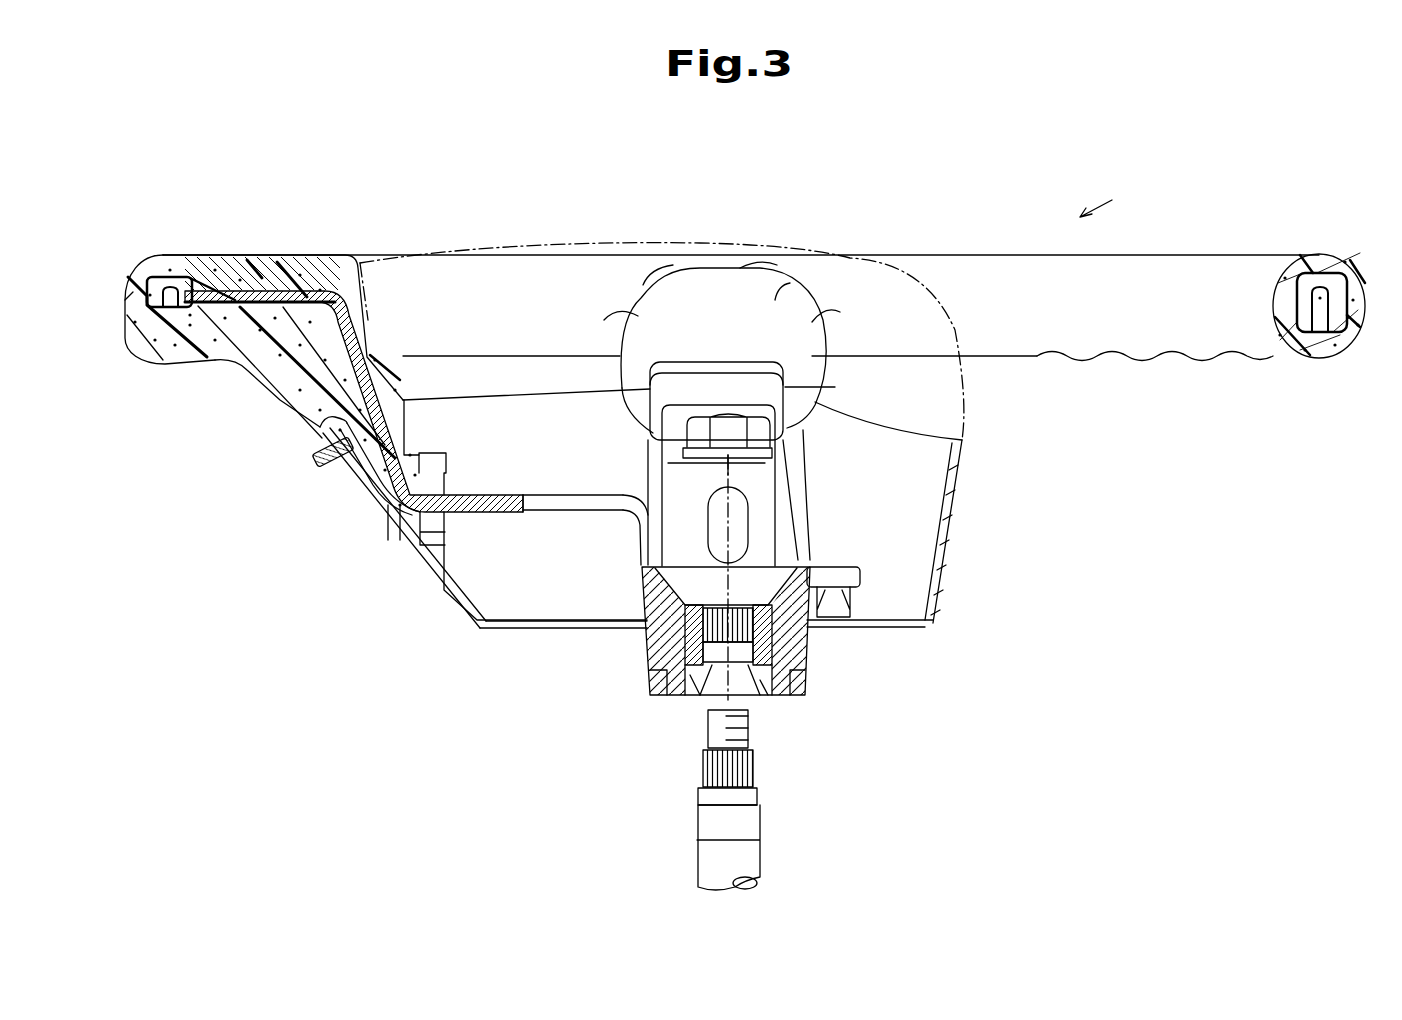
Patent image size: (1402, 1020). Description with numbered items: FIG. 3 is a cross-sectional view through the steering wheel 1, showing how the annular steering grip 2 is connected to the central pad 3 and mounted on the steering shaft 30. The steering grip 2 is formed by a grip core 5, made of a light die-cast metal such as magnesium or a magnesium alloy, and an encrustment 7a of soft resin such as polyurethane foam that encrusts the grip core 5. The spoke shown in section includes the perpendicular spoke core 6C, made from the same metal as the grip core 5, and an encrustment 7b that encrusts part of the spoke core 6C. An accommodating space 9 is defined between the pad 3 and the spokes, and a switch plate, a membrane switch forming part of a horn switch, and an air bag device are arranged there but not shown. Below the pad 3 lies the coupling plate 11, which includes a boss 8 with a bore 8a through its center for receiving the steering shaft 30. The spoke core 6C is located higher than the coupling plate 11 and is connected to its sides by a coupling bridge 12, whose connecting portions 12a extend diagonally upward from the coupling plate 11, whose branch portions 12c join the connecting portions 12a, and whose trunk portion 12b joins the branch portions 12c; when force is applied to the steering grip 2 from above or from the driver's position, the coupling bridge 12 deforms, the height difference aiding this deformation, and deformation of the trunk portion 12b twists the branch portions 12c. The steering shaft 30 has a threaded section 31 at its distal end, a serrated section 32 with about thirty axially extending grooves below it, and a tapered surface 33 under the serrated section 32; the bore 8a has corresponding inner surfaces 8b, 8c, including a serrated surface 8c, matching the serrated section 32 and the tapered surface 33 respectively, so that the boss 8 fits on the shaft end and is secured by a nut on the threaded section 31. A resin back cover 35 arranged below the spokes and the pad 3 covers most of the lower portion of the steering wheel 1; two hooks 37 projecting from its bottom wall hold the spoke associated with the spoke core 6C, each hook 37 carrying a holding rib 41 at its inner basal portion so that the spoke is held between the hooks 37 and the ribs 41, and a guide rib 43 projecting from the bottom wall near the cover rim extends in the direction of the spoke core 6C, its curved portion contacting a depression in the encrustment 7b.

The steering wheel 1 is at (1106, 193).
The steering grip 2 is at (140, 270).
The pad 3 is at (722, 242).
The grip core 5 is at (153, 272).
The spoke core 6C is at (277, 287).
The encrustment 7a is at (130, 333).
The encrustment 7b is at (242, 343).
The boss 8 is at (808, 652).
The bore 8a is at (675, 697).
The serrated bore 8b is at (740, 610).
The serrated surface 8c is at (755, 700).
The accommodating space 9 is at (566, 441).
The coupling plate 11 is at (835, 570).
The coupling bridge 12 is at (513, 478).
The connecting portions 12a is at (628, 490).
The trunk portion 12b is at (487, 512).
The branch portion 12c is at (585, 512).
The steering shaft 30 is at (760, 857).
The threaded section 31 is at (748, 735).
The serrated section 32 is at (753, 770).
The tapered surface 33 is at (698, 818).
The back cover 35 is at (443, 600).
The hooks 37 is at (435, 453).
The holding rib 41 is at (400, 543).
The guide rib 43 is at (330, 458).